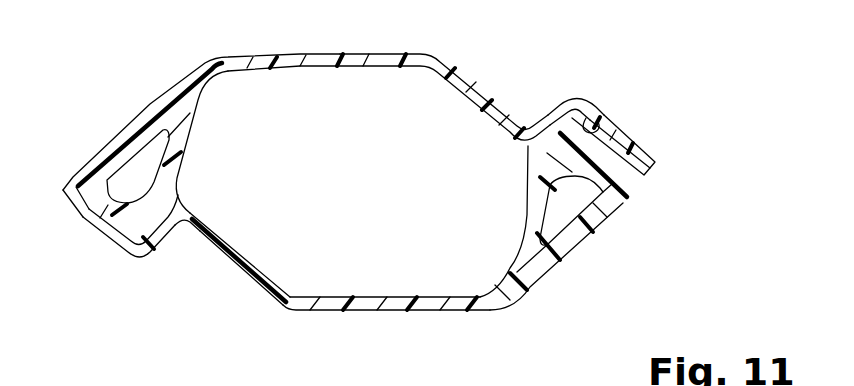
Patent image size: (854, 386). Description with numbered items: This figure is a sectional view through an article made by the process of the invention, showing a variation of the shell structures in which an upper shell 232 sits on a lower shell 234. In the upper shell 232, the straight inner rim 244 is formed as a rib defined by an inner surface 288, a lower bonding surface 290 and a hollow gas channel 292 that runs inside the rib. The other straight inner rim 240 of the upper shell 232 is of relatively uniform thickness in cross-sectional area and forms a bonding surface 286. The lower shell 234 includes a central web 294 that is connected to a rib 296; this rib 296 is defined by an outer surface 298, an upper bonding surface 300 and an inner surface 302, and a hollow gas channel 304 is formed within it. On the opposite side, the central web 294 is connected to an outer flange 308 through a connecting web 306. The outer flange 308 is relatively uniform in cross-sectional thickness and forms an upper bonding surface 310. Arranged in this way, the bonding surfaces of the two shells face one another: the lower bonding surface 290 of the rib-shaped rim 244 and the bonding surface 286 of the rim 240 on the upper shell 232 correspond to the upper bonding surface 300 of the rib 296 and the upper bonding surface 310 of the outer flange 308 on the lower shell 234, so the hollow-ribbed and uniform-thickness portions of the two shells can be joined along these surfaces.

The upper shell 232 is at (472, 75).
The lower shell 234 is at (234, 275).
The straight inner rim 240 is at (500, 104).
The straight inner rim 244 is at (163, 90).
The bonding surface 286 is at (592, 132).
The inner surface 288 is at (188, 144).
The lower bonding surface 290 is at (83, 208).
The hollow gas channel 292 is at (117, 160).
The central web 294 is at (352, 323).
The rib 296 is at (560, 250).
The outer surface 298 is at (625, 201).
The upper bonding surface 300 is at (640, 154).
The inner surface 302 is at (530, 208).
The hollow gas channel 304 is at (590, 227).
The connecting web 306 is at (207, 253).
The outer flange 308 is at (107, 232).
The upper bonding surface 310 is at (128, 204).